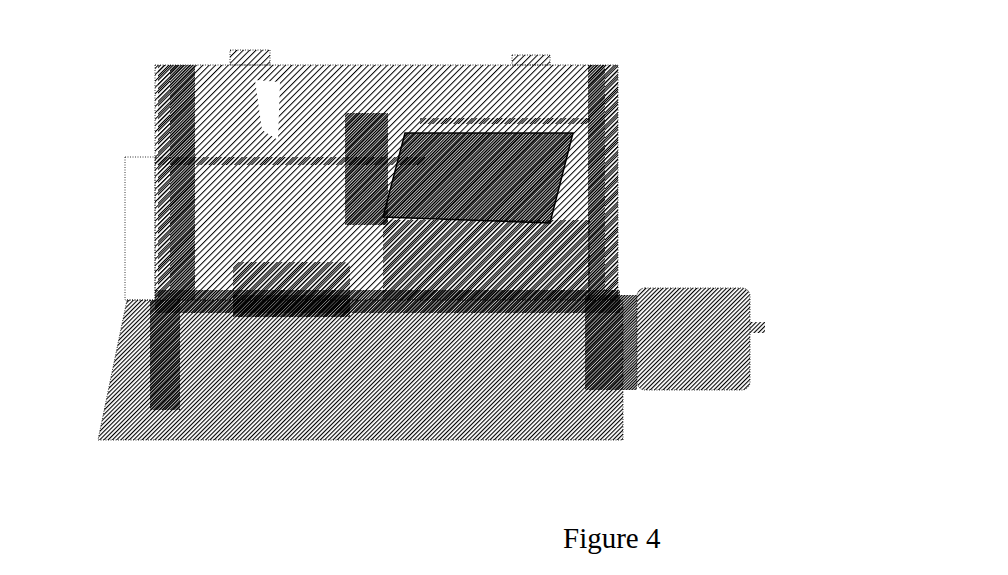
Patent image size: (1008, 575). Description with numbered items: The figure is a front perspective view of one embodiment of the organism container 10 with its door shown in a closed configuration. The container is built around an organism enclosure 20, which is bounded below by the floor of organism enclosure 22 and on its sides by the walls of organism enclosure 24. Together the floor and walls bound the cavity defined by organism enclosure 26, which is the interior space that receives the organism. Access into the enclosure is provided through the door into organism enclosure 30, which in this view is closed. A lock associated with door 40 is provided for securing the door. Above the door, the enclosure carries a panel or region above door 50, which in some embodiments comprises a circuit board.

The organism container 10 is at (484, 266).
The organism enclosure 20 is at (770, 150).
The floor of organism enclosure 22 is at (508, 412).
The walls of organism enclosure 24 is at (480, 67).
The cavity defined by organism enclosure 26 is at (252, 117).
The door into organism enclosure 30 is at (540, 270).
The lock associated with door 40 is at (747, 348).
The panel or region above door in organism enclosure 50 is at (513, 193).